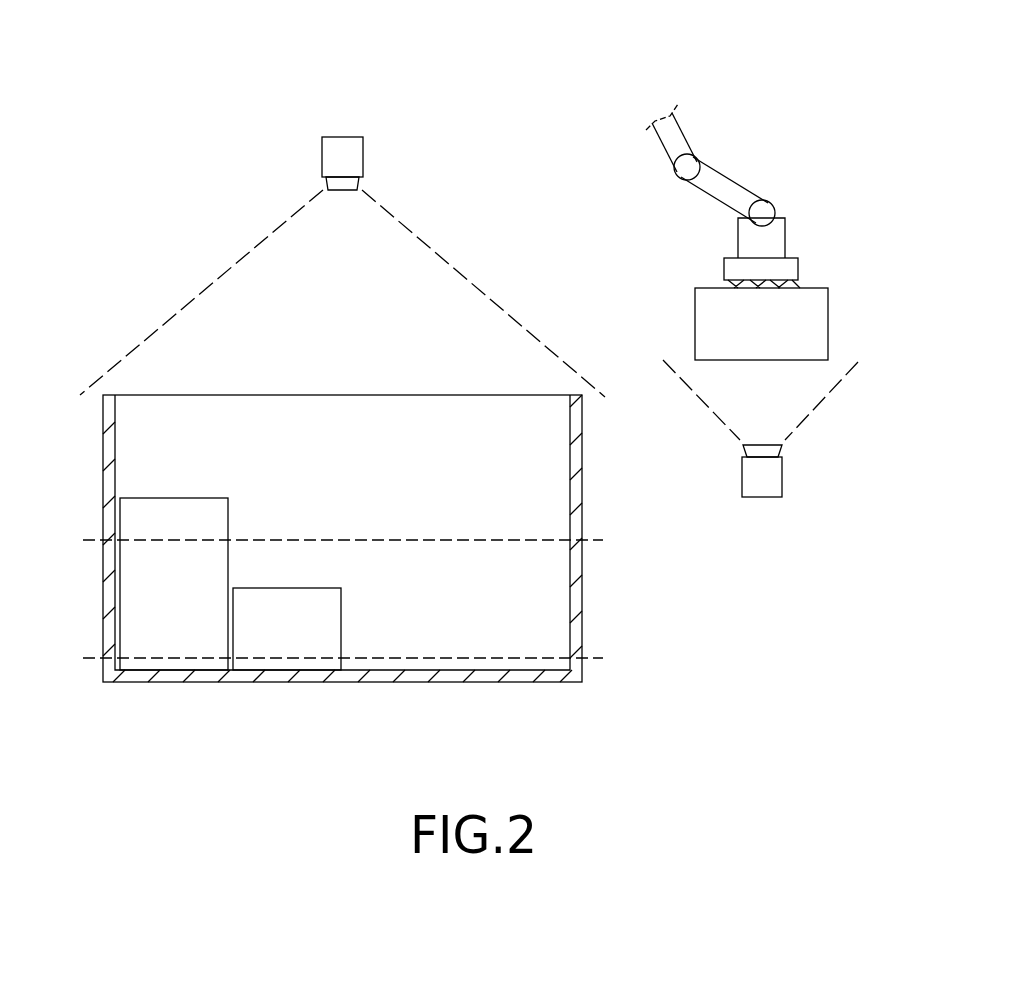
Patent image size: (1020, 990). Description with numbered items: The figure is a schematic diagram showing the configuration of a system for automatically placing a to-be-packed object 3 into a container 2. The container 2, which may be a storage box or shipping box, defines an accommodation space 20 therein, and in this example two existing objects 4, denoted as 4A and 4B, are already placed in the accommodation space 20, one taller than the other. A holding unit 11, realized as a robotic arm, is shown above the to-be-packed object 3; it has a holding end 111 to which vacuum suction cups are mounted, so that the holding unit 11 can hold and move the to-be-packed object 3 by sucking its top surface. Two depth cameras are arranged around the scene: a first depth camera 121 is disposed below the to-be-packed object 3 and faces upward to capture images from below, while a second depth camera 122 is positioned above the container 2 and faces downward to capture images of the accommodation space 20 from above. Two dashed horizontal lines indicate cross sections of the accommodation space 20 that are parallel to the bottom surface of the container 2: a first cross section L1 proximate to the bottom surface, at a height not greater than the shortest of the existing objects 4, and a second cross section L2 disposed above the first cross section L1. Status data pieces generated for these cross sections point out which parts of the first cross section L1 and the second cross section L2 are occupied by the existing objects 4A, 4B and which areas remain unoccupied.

The container 2 is at (107, 432).
The accommodation space 20 is at (150, 465).
The to-be-packed object 3 is at (812, 328).
The existing objects 4 is at (230, 584).
The existing object 4A is at (170, 630).
The existing object 4B is at (290, 630).
The holding unit 11 is at (797, 183).
The holding end 111 is at (793, 270).
The first depth camera 121 is at (762, 485).
The second depth camera 122 is at (341, 148).
The first cross section L1 is at (365, 659).
The second cross section L2 is at (365, 539).